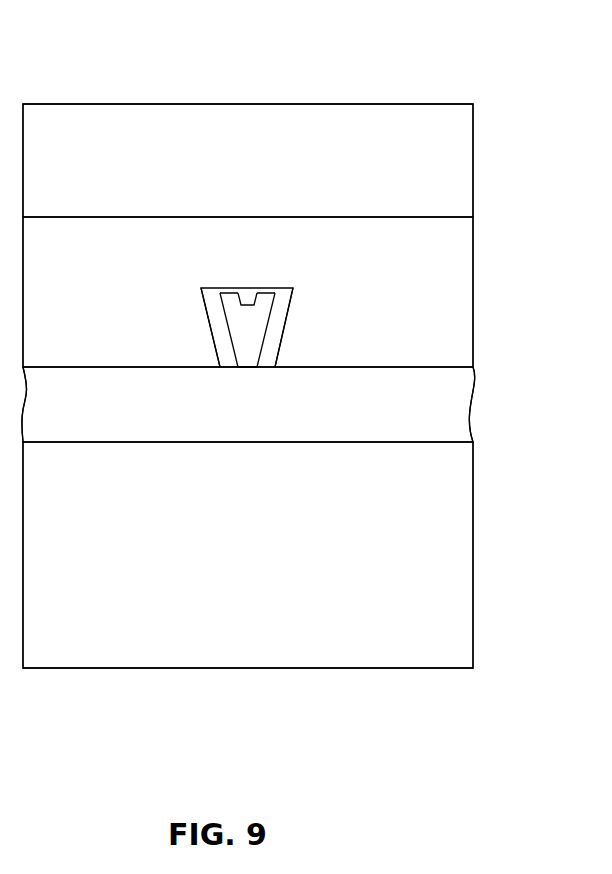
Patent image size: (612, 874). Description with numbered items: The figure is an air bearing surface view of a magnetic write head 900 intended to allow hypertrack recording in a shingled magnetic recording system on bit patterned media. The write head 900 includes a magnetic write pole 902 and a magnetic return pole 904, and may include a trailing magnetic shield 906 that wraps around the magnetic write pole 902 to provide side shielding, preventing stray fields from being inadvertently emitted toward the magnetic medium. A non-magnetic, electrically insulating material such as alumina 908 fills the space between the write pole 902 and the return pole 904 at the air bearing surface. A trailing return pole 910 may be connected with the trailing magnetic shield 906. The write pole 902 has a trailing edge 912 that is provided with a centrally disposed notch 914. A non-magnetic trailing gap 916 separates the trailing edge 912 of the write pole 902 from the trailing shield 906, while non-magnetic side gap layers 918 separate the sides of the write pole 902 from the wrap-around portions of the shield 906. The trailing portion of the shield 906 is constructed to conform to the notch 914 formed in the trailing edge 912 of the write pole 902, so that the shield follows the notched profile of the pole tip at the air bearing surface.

The magnetic write head 900 is at (263, 100).
The trailing return pole 910 is at (284, 162).
The trailing magnetic shield 906 is at (284, 237).
The alumina 908 is at (293, 405).
The magnetic return pole 904 is at (302, 553).
The magnetic write pole 902 is at (250, 323).
The non-magnetic side gap layers 918 is at (225, 339).
The trailing edge 912 is at (229, 293).
The non-magnetic trailing gap 916 is at (262, 292).
The notch 914 is at (247, 306).